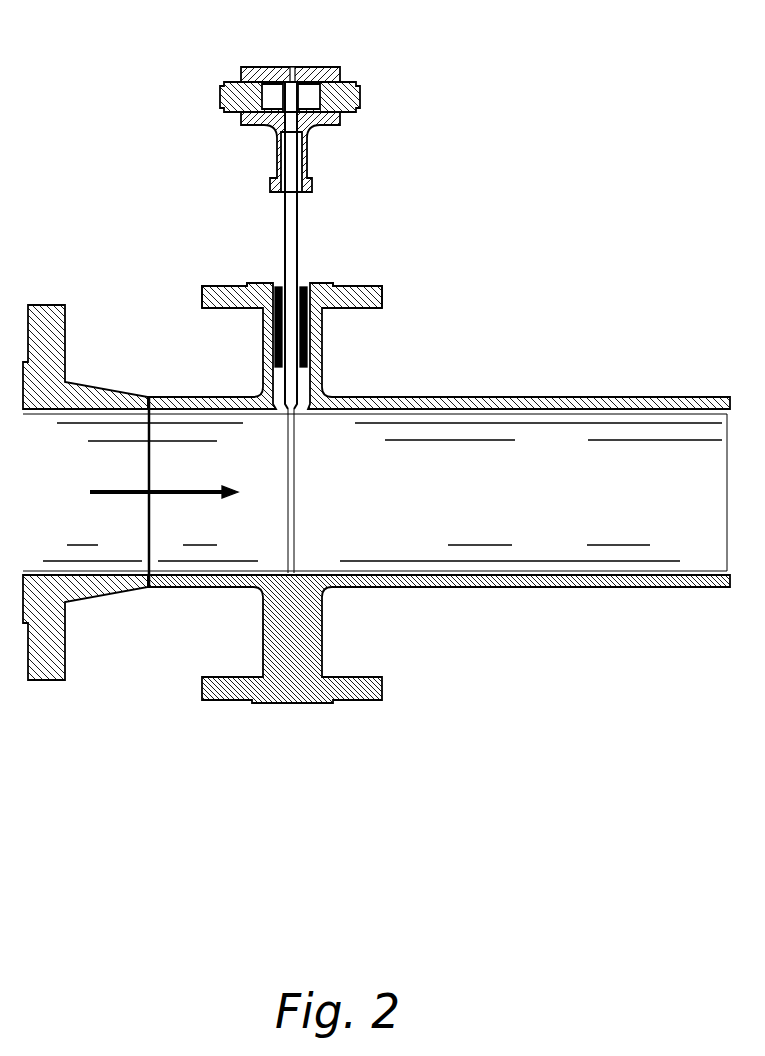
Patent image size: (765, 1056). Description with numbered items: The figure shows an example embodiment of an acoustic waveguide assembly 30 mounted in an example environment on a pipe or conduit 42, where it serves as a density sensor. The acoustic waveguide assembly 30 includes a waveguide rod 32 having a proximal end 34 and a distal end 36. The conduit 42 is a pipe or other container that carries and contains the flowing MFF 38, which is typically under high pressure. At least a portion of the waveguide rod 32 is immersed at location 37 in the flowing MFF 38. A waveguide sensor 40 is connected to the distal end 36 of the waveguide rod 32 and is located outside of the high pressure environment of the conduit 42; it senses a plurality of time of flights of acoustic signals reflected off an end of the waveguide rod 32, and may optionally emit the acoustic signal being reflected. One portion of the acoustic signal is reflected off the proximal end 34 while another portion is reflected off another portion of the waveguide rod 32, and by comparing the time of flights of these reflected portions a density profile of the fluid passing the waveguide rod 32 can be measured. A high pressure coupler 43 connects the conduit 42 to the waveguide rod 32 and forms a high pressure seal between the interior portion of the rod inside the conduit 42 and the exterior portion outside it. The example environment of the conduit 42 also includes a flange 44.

The acoustic waveguide assembly 30 is at (370, 168).
The waveguide rod 32 is at (293, 237).
The proximal end 34 is at (296, 544).
The distal end 36 is at (287, 145).
The location 37 is at (294, 498).
The MFF 38 is at (110, 490).
The waveguide sensor 40 is at (272, 92).
The conduit 42 is at (473, 397).
The high pressure coupler 43 is at (304, 285).
The flange 44 is at (378, 286).